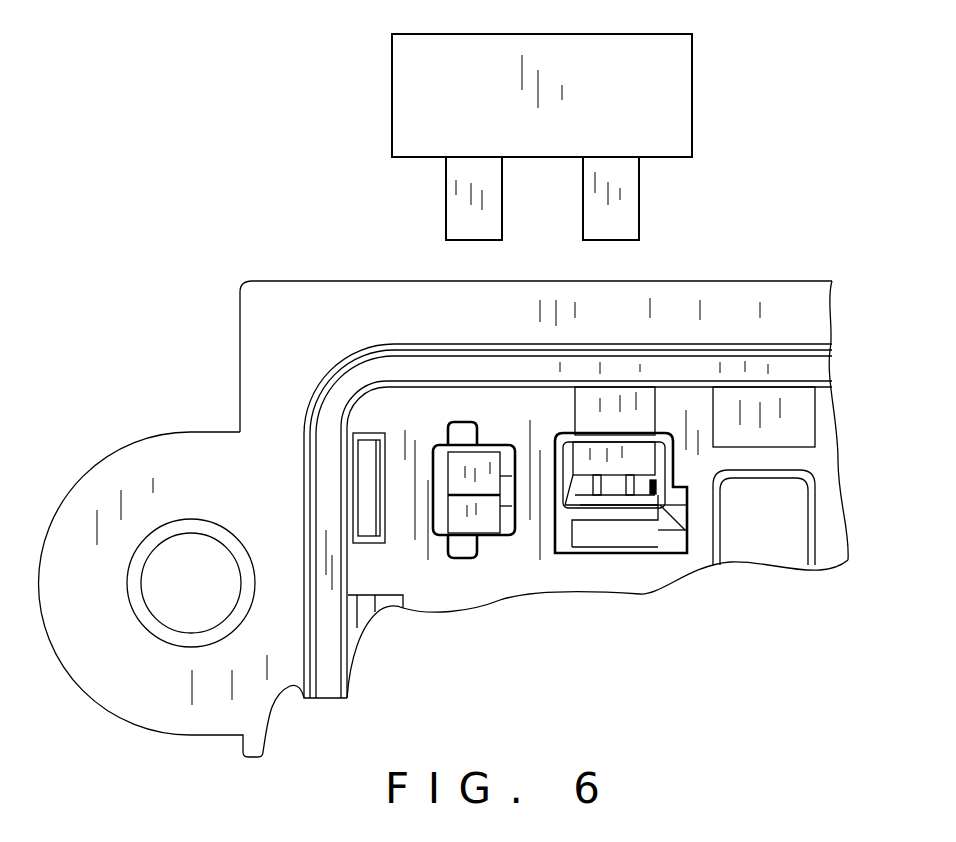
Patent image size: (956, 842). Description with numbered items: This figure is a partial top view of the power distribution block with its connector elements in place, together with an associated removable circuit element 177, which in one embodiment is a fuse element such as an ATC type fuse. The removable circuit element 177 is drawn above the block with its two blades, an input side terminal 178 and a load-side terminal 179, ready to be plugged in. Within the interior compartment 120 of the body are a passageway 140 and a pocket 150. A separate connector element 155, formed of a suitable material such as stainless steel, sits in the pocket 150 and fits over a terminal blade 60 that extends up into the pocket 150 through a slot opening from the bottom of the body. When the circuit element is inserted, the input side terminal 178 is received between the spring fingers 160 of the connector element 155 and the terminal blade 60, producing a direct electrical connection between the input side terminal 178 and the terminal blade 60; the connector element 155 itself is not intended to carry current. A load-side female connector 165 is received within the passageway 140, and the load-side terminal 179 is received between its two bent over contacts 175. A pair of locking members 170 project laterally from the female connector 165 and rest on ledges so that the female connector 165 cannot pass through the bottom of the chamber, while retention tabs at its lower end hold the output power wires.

The terminal blade 60 is at (558, 555).
The interior compartment 120 is at (372, 414).
The passageway 140 is at (405, 461).
The pocket 150 is at (672, 446).
The connector element 155 is at (655, 440).
The spring fingers 160 is at (647, 483).
The load-side female connector 165 is at (447, 517).
The locking member 170 is at (468, 548).
The bent over contact 175 is at (483, 470).
The removable circuit element 177 is at (513, 137).
The input side terminal 178 is at (612, 196).
The load-side terminal 179 is at (478, 196).